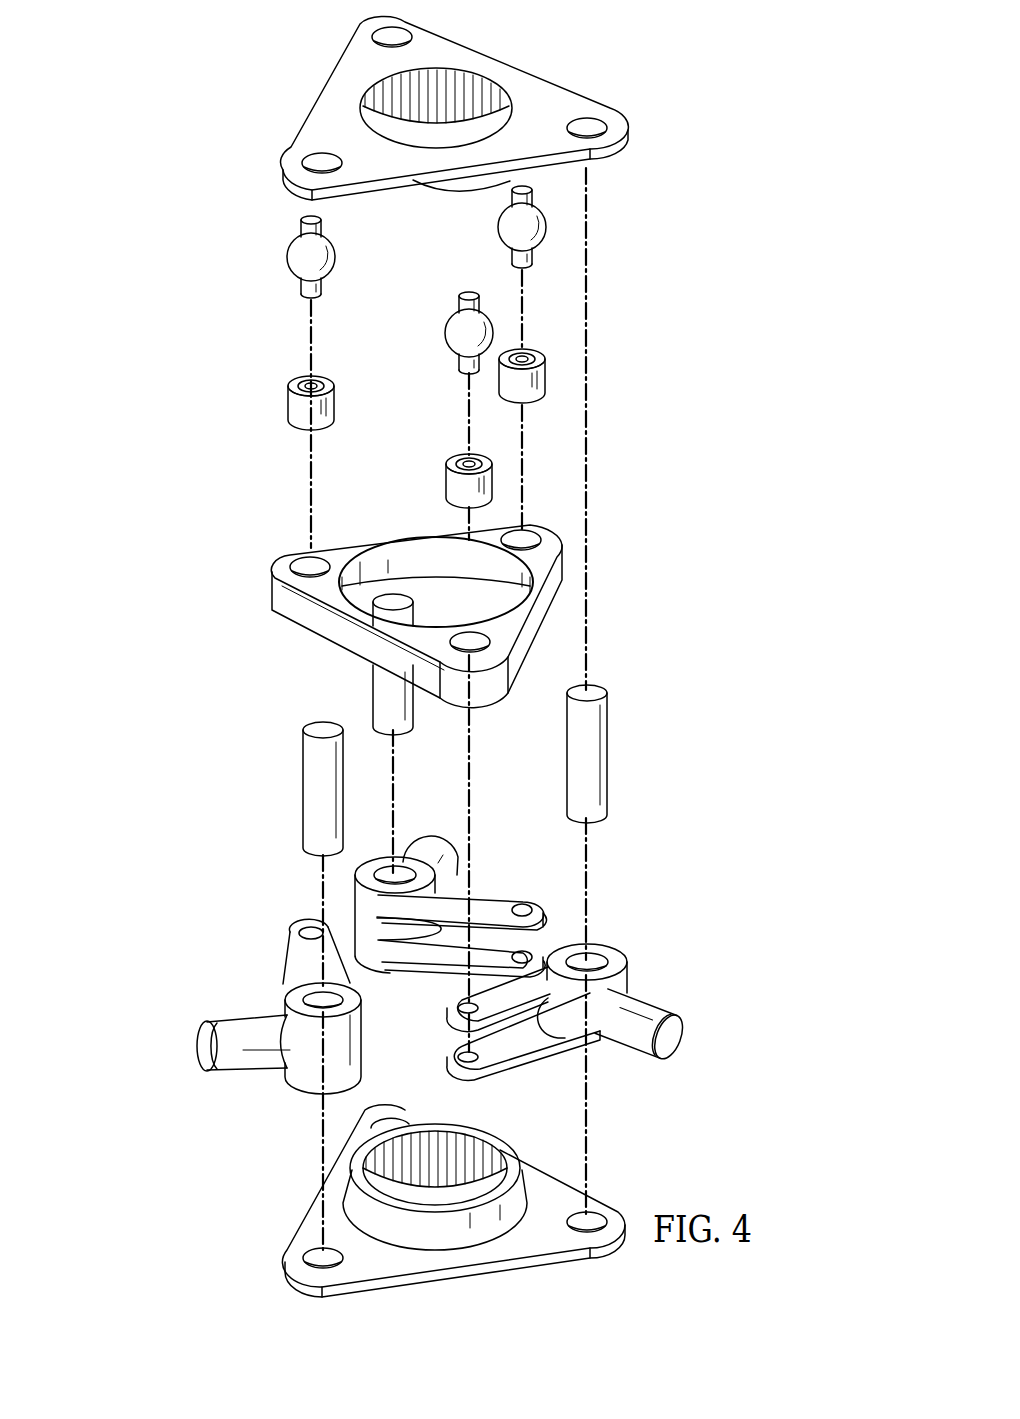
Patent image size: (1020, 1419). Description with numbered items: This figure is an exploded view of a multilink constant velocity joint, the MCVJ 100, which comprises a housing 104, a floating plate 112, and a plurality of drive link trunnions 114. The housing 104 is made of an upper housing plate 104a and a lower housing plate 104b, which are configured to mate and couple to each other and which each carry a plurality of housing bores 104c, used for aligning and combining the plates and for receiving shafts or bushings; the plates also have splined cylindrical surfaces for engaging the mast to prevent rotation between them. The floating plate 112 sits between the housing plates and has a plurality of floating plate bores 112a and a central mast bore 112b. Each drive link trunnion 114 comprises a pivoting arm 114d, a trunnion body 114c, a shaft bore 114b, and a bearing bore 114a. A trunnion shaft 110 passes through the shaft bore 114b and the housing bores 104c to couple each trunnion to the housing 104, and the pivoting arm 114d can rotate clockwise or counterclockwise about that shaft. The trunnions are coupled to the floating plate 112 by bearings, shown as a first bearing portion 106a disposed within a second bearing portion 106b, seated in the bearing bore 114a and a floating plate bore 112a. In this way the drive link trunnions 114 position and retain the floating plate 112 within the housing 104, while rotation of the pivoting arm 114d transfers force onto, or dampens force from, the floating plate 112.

The multilink constant velocity joint 100 is at (140, 255).
The housing 104 is at (542, 48).
The upper housing plate 104a is at (327, 98).
The lower housing plate 104b is at (308, 1230).
The housing bores 104c is at (380, 33).
The first bearing portion 106a is at (290, 252).
The second bearing portion 106b is at (292, 405).
The trunnion shaft 110 is at (375, 690).
The floating plate 112 is at (266, 601).
The floating plate bores 112a is at (300, 553).
The mast bore 112b is at (372, 562).
The drive link trunnions 114 is at (441, 961).
The bearing bore 114a is at (521, 902).
The shaft bore 114b is at (357, 862).
The trunnion body 114c is at (430, 840).
The pivoting arm 114d is at (483, 883).